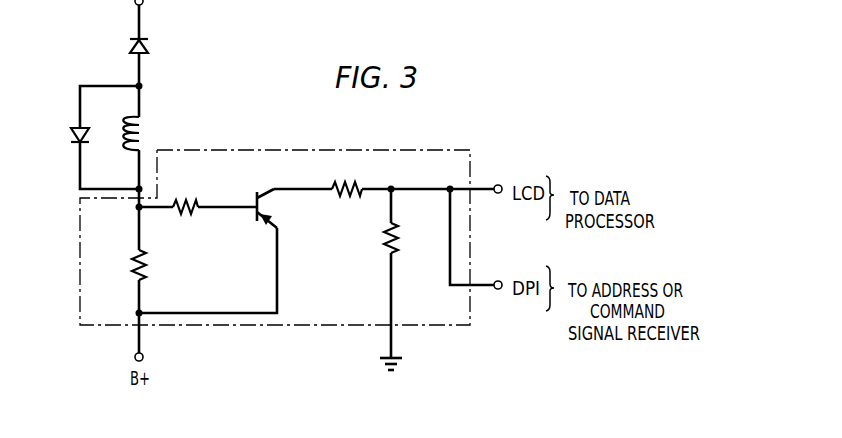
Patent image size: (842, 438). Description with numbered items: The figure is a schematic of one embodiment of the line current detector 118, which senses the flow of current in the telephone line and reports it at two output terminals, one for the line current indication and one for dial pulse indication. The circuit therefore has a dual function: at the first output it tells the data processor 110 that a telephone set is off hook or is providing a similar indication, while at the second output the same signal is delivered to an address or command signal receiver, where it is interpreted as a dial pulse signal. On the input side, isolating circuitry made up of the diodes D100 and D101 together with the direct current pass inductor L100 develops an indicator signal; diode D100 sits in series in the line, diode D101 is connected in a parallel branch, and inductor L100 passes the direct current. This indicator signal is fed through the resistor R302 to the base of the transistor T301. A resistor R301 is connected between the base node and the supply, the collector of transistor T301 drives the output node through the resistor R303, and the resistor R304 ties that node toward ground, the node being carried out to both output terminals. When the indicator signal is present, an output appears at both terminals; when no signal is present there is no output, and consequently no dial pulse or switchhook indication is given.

The line current detector 118 is at (470, 150).
The data processor 110 is at (603, 241).
The diode D100 is at (160, 46).
The diode D101 is at (62, 135).
The direct current pass inductor L100 is at (156, 133).
The resistor R301 is at (118, 265).
The resistor R302 is at (188, 222).
The resistor R303 is at (347, 173).
The resistor R304 is at (369, 238).
The transistor T301 is at (288, 208).